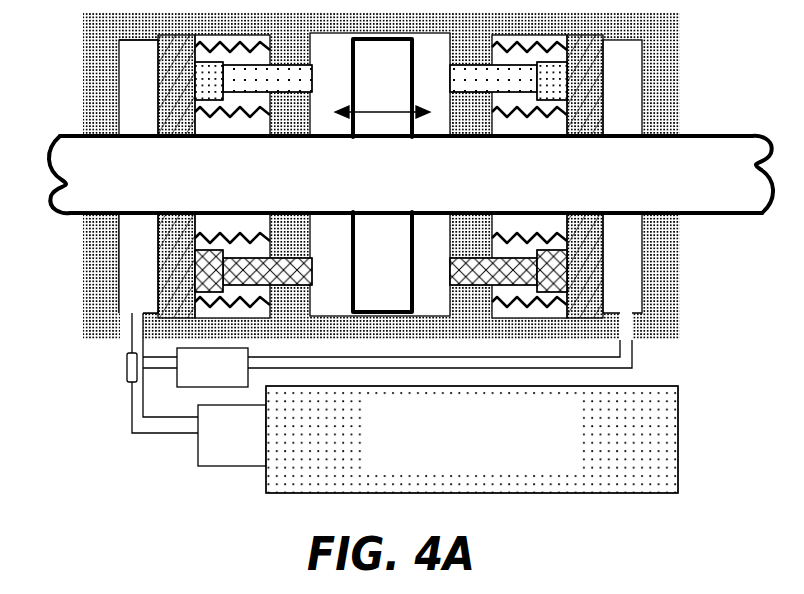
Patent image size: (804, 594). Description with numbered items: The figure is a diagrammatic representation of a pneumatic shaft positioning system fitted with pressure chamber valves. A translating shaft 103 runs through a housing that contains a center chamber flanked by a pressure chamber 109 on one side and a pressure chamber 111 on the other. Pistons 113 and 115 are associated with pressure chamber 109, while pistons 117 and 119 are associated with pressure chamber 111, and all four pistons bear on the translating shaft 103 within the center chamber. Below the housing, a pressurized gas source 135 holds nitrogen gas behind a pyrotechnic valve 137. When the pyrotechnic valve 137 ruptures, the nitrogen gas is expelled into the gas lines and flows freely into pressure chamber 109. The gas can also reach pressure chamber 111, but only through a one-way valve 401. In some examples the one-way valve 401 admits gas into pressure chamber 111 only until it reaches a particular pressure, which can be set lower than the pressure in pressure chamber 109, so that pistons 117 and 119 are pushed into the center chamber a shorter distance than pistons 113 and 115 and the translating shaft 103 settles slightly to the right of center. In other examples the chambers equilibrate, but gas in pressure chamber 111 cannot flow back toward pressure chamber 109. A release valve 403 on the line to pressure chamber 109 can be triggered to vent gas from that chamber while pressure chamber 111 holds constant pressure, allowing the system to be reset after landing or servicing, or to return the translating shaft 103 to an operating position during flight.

The translating shaft 103 is at (527, 187).
The pressure chamber 109 is at (130, 98).
The pressure chamber 111 is at (626, 57).
The piston 113 is at (158, 52).
The piston 115 is at (158, 278).
The piston 117 is at (605, 115).
The piston 119 is at (605, 290).
The pressurized gas source 135 is at (535, 465).
The pyrotechnic valve 137 is at (212, 445).
The one-way valve 401 is at (192, 380).
The release valve 403 is at (125, 368).